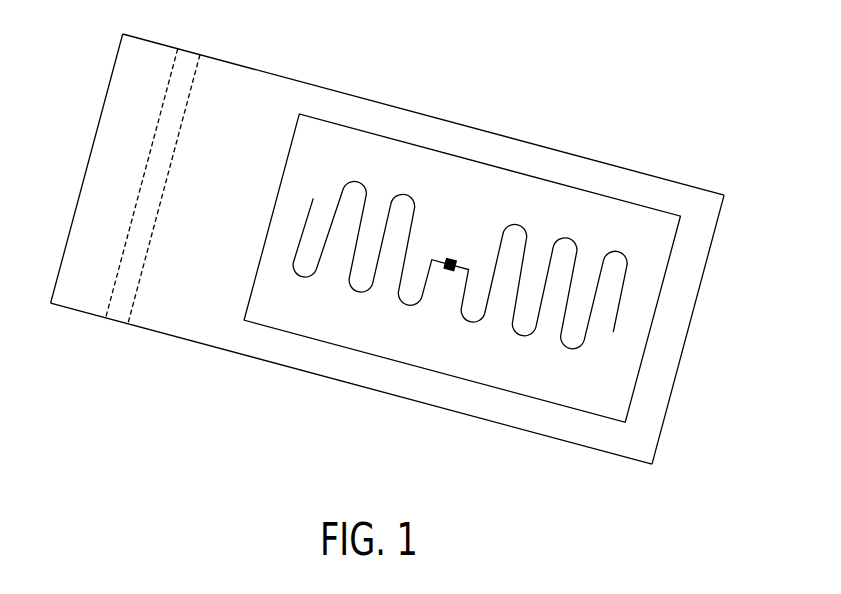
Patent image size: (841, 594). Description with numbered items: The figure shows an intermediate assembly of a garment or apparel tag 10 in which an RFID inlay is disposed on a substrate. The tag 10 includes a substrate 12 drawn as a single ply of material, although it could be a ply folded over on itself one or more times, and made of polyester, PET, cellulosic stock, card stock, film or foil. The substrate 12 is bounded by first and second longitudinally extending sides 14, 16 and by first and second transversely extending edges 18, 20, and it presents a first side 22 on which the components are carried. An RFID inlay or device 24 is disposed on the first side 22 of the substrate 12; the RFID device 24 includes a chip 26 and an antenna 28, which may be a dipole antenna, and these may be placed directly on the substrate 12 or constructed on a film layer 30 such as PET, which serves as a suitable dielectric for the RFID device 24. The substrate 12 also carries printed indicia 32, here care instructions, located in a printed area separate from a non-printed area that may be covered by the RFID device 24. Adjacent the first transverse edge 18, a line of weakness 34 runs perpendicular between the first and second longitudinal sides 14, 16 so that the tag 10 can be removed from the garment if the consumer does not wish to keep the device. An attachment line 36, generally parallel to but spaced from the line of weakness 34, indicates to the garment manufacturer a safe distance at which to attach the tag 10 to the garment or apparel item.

The garment or apparel tag 10 is at (663, 82).
The substrate 12 is at (245, 73).
The first longitudinally extending side 14 is at (350, 95).
The second longitudinally extending side 16 is at (217, 347).
The first transversely extending edge 18 is at (92, 172).
The second transversely extending edge 20 is at (705, 275).
The first side 22 is at (141, 71).
The RFID inlay 24 is at (462, 268).
The chip 26 is at (450, 273).
The antenna 28 is at (565, 348).
The film layer 30 is at (343, 320).
The printed indicia 32 is at (197, 232).
The line of weakness 34 is at (132, 307).
The attachment line 36 is at (115, 283).